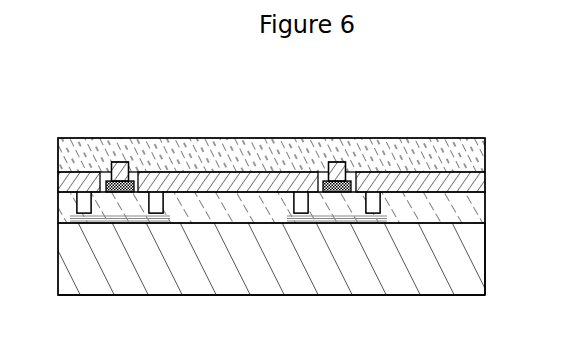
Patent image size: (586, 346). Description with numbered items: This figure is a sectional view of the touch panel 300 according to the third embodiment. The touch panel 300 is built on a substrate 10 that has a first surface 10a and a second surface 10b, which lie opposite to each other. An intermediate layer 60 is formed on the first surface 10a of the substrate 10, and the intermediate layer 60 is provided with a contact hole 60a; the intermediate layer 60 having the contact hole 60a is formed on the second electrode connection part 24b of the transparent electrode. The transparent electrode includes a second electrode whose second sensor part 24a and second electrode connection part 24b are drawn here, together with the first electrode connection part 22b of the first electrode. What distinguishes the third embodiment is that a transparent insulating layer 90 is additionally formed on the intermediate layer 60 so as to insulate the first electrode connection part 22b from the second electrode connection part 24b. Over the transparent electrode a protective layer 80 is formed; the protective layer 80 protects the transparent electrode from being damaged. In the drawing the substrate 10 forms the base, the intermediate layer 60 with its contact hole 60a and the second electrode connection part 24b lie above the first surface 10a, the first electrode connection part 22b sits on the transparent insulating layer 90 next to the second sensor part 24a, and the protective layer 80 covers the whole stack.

The touch panel 300 is at (68, 85).
The substrate 10 is at (482, 260).
The first surface 10a is at (433, 226).
The second surface 10b is at (383, 286).
The intermediate layer 60 is at (473, 212).
The contact hole 60a is at (373, 207).
The second sensor part 24a is at (203, 183).
The second electrode connection part 24b is at (317, 218).
The protective layer 80 is at (437, 145).
The transparent insulating layer 90 is at (101, 189).
The first electrode connection part 22b is at (115, 163).